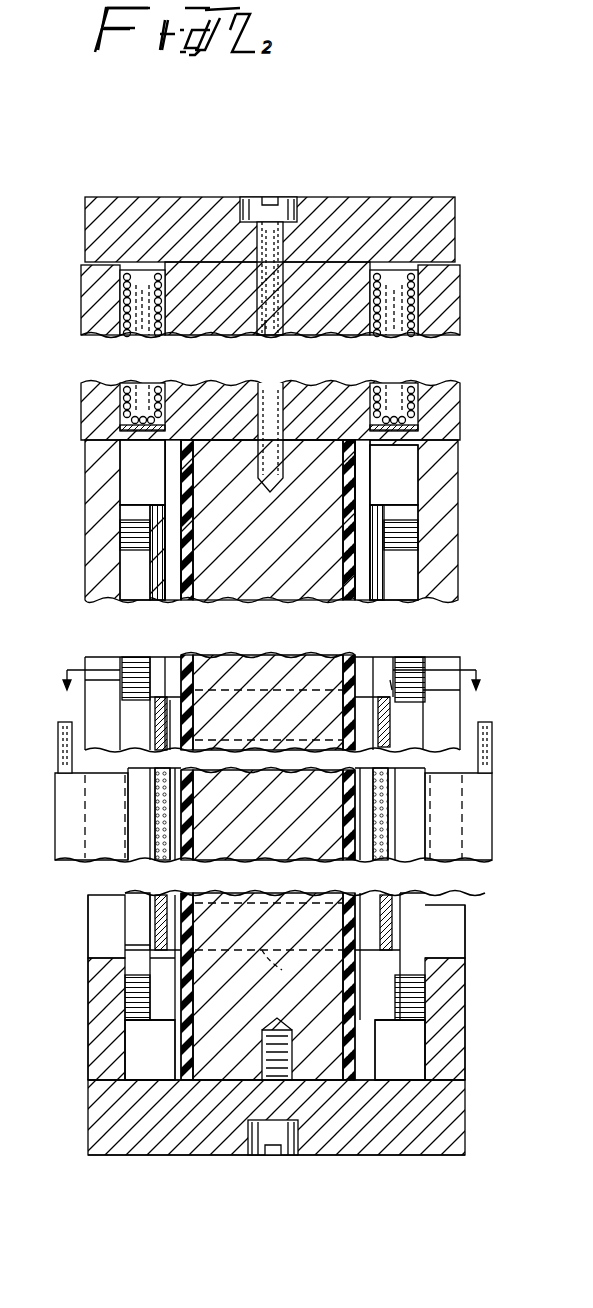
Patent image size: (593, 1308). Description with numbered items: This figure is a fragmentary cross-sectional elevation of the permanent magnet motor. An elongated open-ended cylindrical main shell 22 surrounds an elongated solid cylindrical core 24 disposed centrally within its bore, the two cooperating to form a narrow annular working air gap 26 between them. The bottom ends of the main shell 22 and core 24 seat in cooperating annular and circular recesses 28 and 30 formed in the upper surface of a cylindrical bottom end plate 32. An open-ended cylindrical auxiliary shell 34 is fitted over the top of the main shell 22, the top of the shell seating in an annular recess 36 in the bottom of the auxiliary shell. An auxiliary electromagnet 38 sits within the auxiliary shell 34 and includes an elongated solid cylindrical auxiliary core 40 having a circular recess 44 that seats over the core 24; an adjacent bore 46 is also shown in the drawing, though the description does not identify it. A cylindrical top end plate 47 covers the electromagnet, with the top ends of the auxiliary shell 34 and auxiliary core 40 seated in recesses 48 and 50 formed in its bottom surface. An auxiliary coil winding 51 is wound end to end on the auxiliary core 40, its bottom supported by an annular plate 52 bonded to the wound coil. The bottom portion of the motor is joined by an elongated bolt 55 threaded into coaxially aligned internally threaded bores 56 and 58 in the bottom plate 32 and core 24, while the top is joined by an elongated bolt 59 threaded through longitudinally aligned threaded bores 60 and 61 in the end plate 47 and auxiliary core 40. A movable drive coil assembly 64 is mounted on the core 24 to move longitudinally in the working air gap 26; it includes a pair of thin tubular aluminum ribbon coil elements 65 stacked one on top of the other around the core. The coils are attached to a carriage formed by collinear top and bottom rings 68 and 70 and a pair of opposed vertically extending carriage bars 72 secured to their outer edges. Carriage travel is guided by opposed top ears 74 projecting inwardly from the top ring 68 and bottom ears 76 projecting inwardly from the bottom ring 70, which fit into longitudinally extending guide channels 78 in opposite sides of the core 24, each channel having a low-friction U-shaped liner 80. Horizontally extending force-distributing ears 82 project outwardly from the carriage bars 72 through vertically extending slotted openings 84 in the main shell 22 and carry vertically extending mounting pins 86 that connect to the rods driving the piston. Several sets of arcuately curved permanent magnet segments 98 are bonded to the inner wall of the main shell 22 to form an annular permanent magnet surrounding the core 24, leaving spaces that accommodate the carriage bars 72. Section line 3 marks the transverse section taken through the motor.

The main shell 22 is at (460, 976).
The core 24 is at (292, 600).
The working air gap 26 is at (128, 478).
The annular recess 28 is at (448, 1054).
The section line 3- 3 is at (269, 693).
The circular recess 30 is at (314, 1008).
The bottom end plate 32 is at (458, 1106).
The auxiliary shell 34 is at (460, 392).
The annular recess 36 is at (448, 452).
The auxiliary electromagnet 38 is at (401, 336).
The auxiliary core 40 is at (326, 368).
The circular recess 44 is at (342, 468).
The bore 46 is at (178, 464).
The top end plate 47 is at (402, 208).
The circular recess 48 is at (310, 272).
The annular recess 50 is at (460, 291).
The auxiliary coil winding 51 is at (385, 383).
The annular plate 52 is at (412, 448).
The bolt 55 is at (280, 1156).
The internally threaded bore 56 is at (265, 1152).
The internally threaded bore 58 is at (274, 1032).
The bolt 59 is at (278, 200).
The internally threaded bore 60 is at (284, 235).
The internally threaded bore 61 is at (255, 340).
The movable drive coil assembly 64 is at (392, 672).
The coil elements 65 is at (158, 860).
The top ring 68 is at (272, 680).
The bottom ring 70 is at (288, 970).
The carriage bars 72 is at (138, 933).
The top ears 74 is at (198, 706).
The bottom ears 76 is at (182, 931).
The guide channels 78 is at (186, 600).
The U-shaped liner 80 is at (204, 656).
The force-distributing ears 82 is at (84, 860).
The slotted openings 84 is at (96, 608).
The mounting pins 86 is at (60, 772).
The permanent magnet segments 98 is at (147, 596).